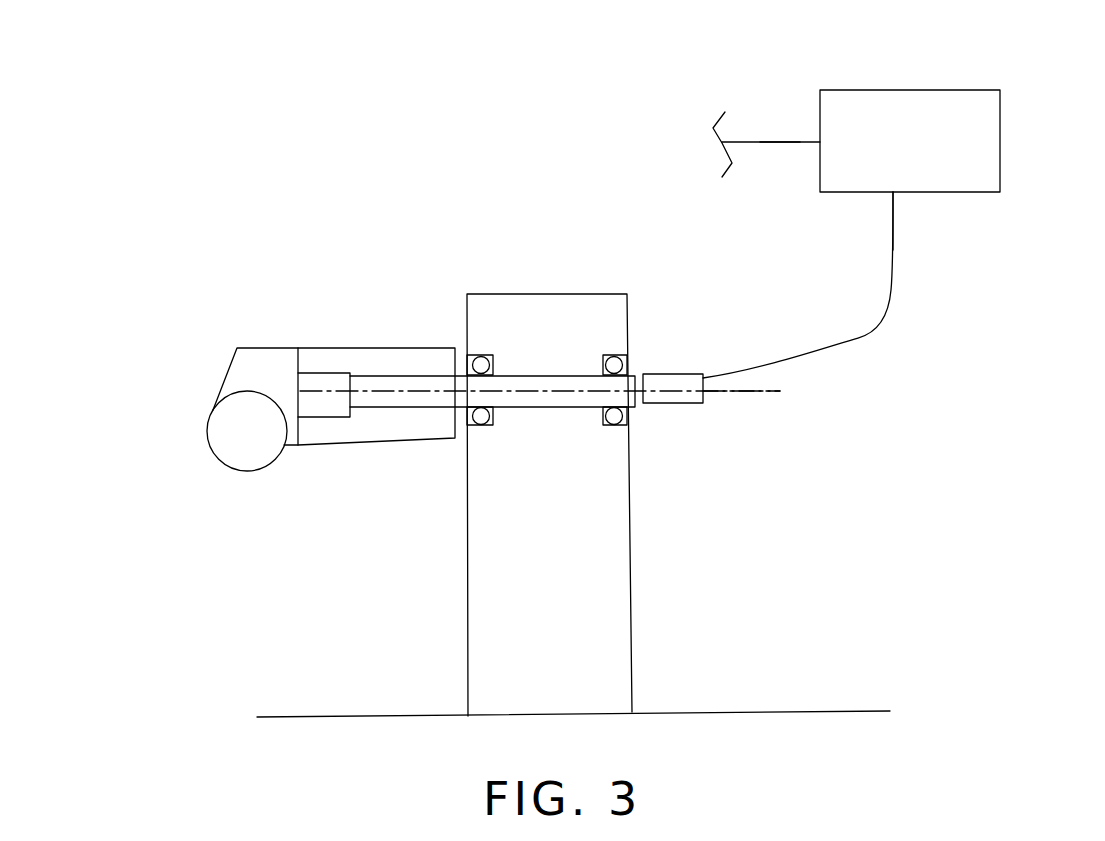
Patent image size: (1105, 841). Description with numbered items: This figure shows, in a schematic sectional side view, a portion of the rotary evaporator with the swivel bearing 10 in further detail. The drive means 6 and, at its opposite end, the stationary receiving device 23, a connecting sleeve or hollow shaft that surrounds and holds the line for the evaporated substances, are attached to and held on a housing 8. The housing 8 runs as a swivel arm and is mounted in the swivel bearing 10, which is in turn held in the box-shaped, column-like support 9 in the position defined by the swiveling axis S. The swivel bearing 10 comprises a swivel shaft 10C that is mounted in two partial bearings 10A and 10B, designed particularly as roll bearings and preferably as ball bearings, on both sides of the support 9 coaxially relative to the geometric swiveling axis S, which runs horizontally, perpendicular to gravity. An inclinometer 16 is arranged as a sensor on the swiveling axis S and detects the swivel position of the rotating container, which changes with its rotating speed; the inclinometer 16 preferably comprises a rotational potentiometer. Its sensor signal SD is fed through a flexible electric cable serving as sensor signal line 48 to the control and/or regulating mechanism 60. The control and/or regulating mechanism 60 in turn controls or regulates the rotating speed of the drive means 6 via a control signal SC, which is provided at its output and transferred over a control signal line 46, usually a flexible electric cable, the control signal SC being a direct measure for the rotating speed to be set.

The drive means 6 is at (247, 368).
The housing 8 is at (331, 444).
The receiving device 23 is at (232, 470).
The support 9 is at (617, 643).
The swivel bearing 10 is at (656, 350).
The partial bearing 10A is at (485, 426).
The partial bearing 10B is at (612, 424).
The swivel shaft 10C is at (548, 392).
The inclinometer 16 is at (687, 405).
The swiveling axis S is at (780, 388).
The sensor signal line 48 is at (873, 332).
The sensor signal SD is at (895, 252).
The control and/or regulating mechanism 60 is at (1000, 137).
The control signal line 46 is at (797, 143).
The control signal SC is at (768, 142).